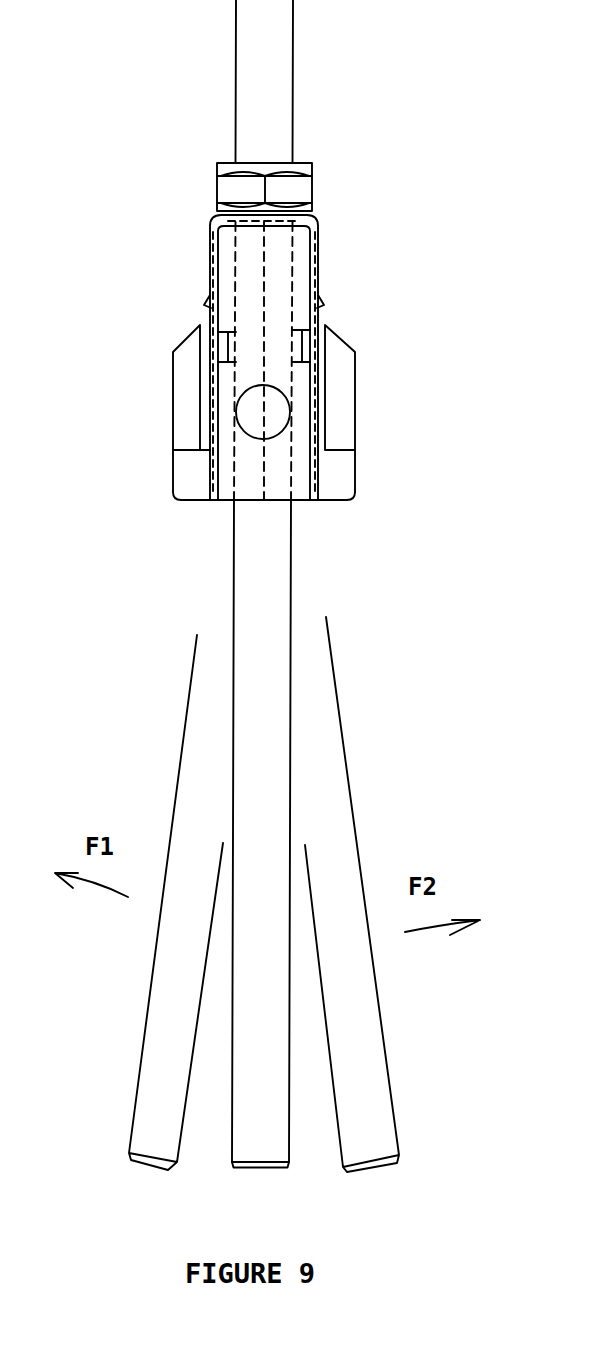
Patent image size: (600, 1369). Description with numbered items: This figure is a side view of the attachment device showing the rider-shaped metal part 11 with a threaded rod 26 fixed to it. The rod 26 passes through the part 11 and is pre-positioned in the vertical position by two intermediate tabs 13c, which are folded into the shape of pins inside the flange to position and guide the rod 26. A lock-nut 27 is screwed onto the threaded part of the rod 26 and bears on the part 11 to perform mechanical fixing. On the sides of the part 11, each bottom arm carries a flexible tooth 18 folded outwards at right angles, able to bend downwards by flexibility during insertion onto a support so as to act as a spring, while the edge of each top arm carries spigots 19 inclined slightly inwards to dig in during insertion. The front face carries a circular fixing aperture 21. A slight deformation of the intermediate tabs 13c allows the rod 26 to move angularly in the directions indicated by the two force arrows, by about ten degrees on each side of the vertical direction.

The metal part 11 is at (420, 405).
The intermediate tabs 13c is at (223, 347).
The flexible tooth 18 is at (192, 388).
The spigots 19 is at (208, 303).
The circular fixing aperture 21 is at (263, 410).
The threaded rod 26 is at (268, 92).
The lock-nut 27 is at (283, 190).